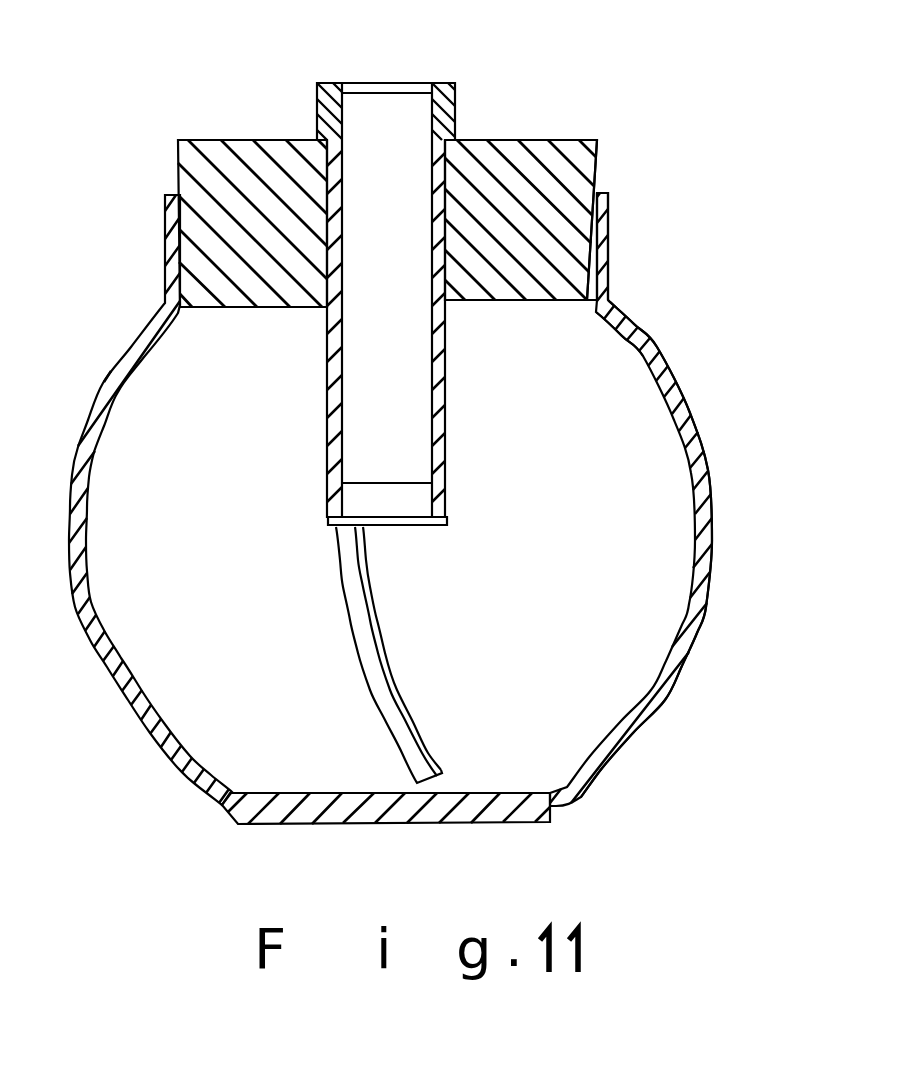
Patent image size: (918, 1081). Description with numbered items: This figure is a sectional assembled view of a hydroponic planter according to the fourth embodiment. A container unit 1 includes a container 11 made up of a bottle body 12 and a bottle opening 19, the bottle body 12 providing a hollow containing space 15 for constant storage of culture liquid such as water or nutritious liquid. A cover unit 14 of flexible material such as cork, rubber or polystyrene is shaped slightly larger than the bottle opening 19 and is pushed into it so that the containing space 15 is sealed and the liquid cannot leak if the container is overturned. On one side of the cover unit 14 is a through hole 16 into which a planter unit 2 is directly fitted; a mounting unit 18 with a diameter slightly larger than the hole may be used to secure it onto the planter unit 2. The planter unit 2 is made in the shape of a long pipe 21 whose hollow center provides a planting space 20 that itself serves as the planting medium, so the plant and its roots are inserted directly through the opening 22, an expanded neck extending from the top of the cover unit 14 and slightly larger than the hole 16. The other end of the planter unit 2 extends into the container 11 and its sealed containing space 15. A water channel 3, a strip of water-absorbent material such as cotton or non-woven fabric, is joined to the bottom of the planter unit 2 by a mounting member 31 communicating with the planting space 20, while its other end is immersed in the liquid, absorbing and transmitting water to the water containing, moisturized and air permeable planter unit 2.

The container unit 1 is at (429, 505).
The planter unit 2 is at (447, 327).
The water channel 3 is at (370, 667).
The container 11 is at (713, 557).
The bottle body 12 is at (712, 487).
The cover unit 14 is at (607, 225).
The containing space 15 is at (625, 366).
The hole 16 is at (317, 137).
The mounting unit 18 is at (457, 127).
The bottle opening 19 is at (597, 188).
The planting space 20 is at (402, 140).
The long pipe 21 is at (367, 403).
The opening 22 is at (362, 88).
The mounting member 31 is at (360, 505).